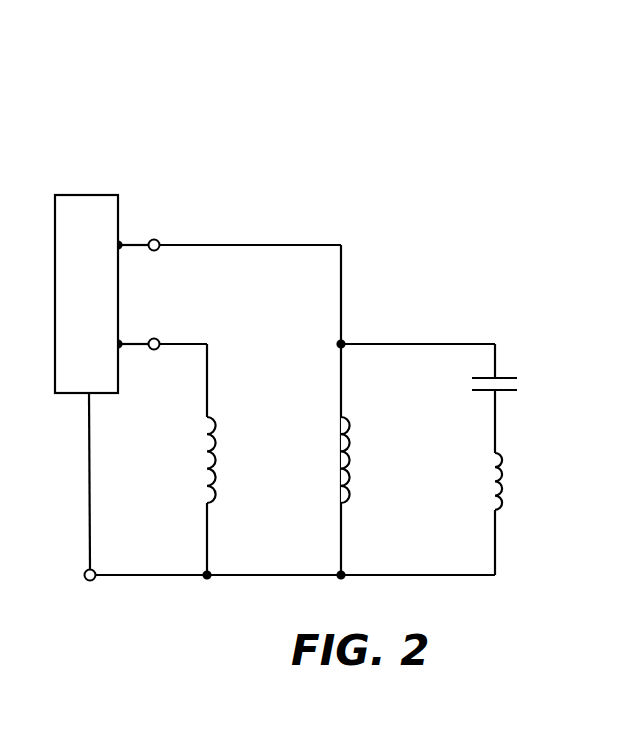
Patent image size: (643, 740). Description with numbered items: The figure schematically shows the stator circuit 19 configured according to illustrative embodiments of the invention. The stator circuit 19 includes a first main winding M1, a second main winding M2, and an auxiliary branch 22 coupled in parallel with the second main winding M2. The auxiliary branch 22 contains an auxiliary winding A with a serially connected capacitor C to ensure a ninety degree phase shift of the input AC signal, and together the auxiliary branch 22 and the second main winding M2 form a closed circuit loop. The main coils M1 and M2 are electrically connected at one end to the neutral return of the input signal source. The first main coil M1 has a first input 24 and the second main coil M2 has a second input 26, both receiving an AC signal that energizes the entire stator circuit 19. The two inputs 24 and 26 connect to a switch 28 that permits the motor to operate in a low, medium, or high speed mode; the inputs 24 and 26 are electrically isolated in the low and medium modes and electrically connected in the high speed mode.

The stator circuit 19 is at (438, 127).
The auxiliary branch 22 is at (528, 340).
The first input 24 is at (161, 327).
The second input 26 is at (161, 228).
The switch 28 is at (75, 195).